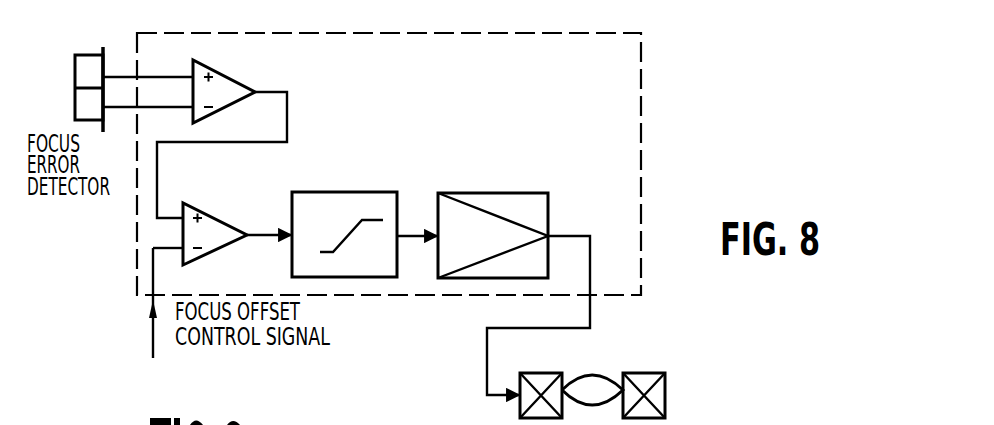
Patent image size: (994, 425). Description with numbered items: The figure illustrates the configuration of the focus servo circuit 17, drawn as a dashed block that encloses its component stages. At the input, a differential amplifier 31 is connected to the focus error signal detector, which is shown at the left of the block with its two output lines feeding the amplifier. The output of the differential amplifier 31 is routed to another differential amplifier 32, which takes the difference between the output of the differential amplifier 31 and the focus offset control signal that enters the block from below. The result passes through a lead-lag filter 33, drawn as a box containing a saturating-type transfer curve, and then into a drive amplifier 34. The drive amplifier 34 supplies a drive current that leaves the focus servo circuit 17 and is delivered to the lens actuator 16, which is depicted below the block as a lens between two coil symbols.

The lens actuator 16 is at (593, 368).
The focus servo circuit 17 is at (641, 92).
The differential amplifier 31 is at (213, 70).
The differential amplifier 32 is at (200, 207).
The lead-lag filter 33 is at (342, 192).
The drive amplifier 34 is at (482, 193).